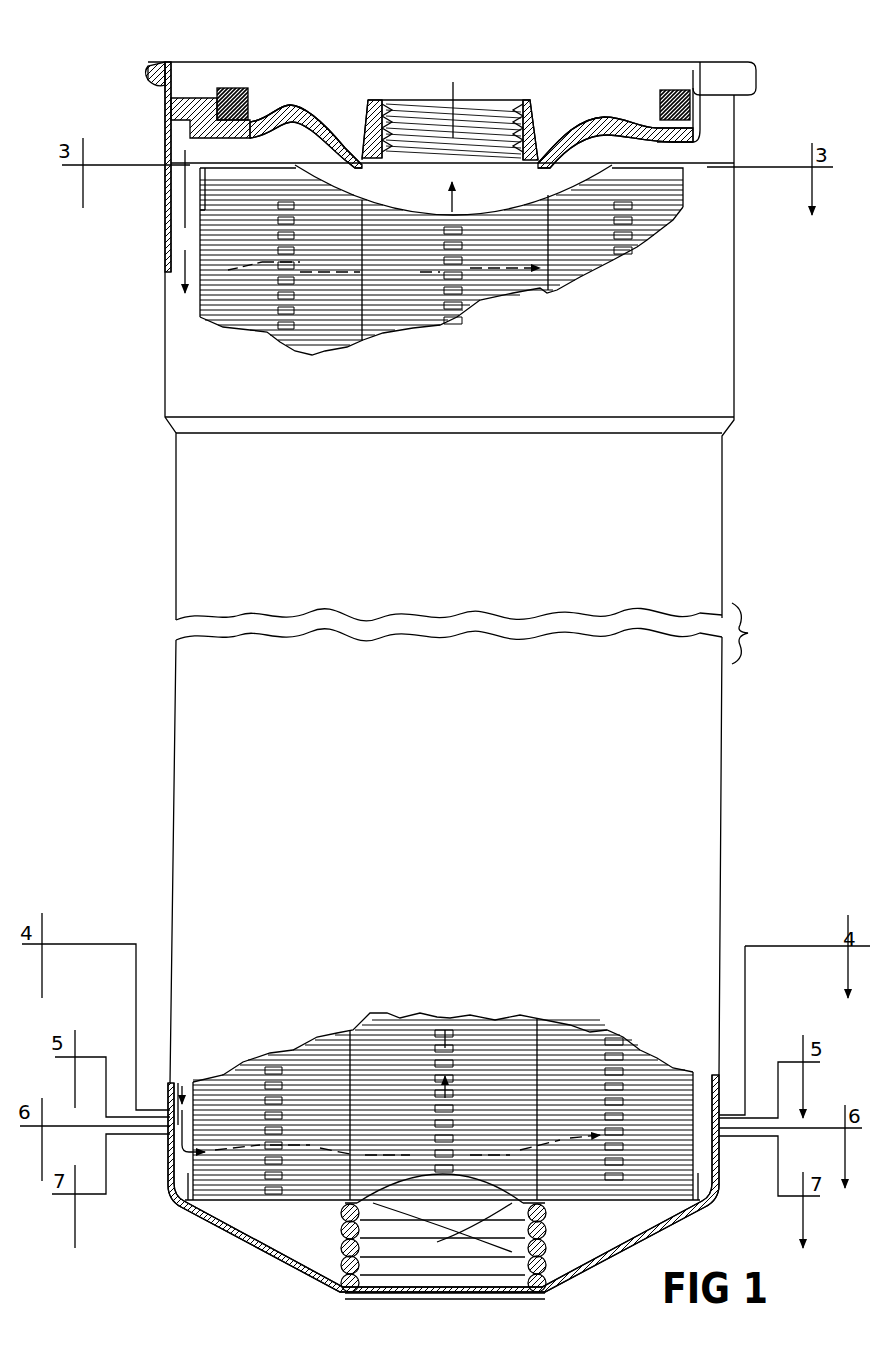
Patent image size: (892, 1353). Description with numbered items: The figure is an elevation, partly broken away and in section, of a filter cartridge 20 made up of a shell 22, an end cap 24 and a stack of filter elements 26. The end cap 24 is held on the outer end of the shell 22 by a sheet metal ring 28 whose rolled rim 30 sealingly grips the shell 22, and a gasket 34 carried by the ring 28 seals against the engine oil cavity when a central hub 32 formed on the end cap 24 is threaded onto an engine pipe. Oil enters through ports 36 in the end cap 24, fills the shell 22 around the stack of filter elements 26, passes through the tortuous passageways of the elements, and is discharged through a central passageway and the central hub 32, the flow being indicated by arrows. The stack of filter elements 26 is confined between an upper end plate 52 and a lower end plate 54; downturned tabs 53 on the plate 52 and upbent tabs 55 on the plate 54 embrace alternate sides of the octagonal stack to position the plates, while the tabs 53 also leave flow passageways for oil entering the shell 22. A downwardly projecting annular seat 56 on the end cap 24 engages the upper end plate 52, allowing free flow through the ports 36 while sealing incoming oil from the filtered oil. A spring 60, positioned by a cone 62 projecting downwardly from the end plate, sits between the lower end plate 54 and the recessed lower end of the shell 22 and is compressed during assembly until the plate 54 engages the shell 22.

The filter cartridge 20 is at (746, 577).
The shell 22 is at (735, 342).
The end cap 24 is at (636, 118).
The filter elements 26 is at (207, 287).
The sheet metal ring 28 is at (186, 96).
The rolled rim 30 is at (163, 66).
The central hub 32 is at (594, 112).
The gasket 34 is at (230, 94).
The ports 36 is at (286, 152).
The upper end plate 52 is at (653, 167).
The downturned tabs 53 is at (496, 194).
The lower end plate 54 is at (582, 1205).
The upbent tabs 55 is at (446, 1177).
The annular seat 56 is at (343, 158).
The spring 60 is at (346, 1247).
The cone 62 is at (541, 1248).